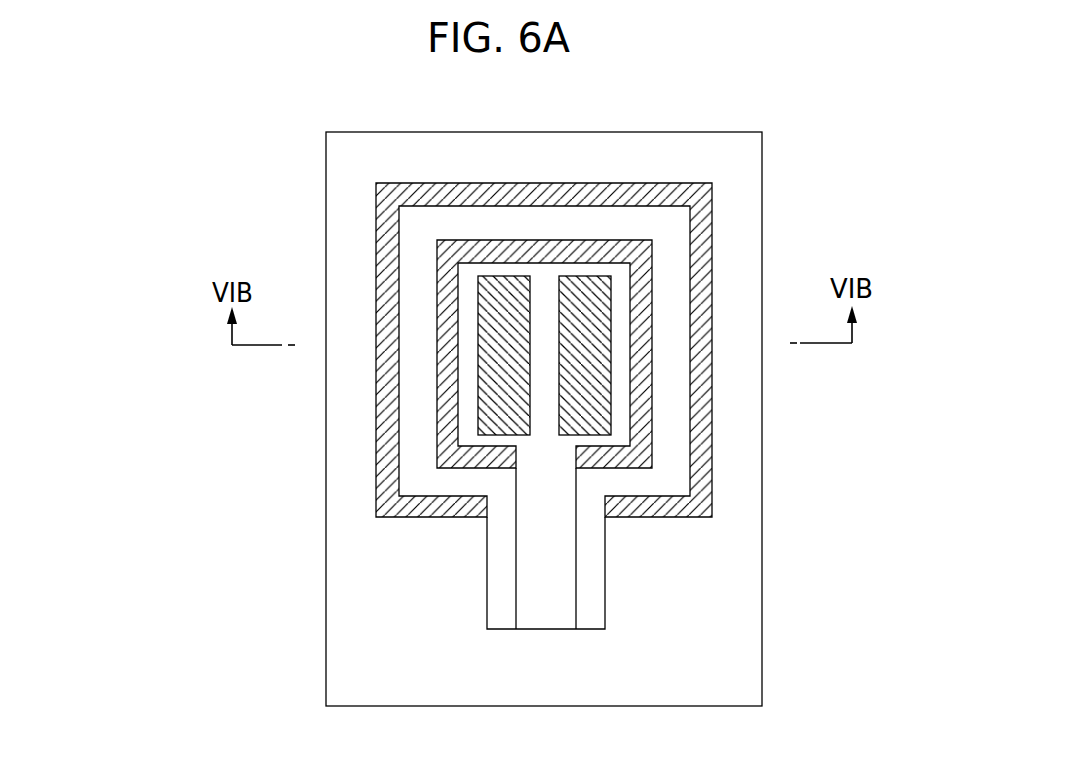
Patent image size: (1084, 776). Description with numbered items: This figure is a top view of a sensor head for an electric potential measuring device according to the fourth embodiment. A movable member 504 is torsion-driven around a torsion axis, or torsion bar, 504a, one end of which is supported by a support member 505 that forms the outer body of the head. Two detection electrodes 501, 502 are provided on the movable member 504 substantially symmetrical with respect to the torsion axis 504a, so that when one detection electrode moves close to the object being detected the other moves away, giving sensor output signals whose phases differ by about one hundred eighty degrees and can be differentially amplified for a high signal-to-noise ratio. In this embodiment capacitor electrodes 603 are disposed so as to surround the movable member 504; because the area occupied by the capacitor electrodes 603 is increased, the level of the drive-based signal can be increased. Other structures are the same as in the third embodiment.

The detection electrode 501 is at (488, 304).
The detection electrode 502 is at (610, 297).
The movable member 504 is at (618, 358).
The torsion axis (torsion bar) 504a is at (560, 589).
The support member 505 is at (730, 661).
The capacitor electrodes 603 is at (570, 247).